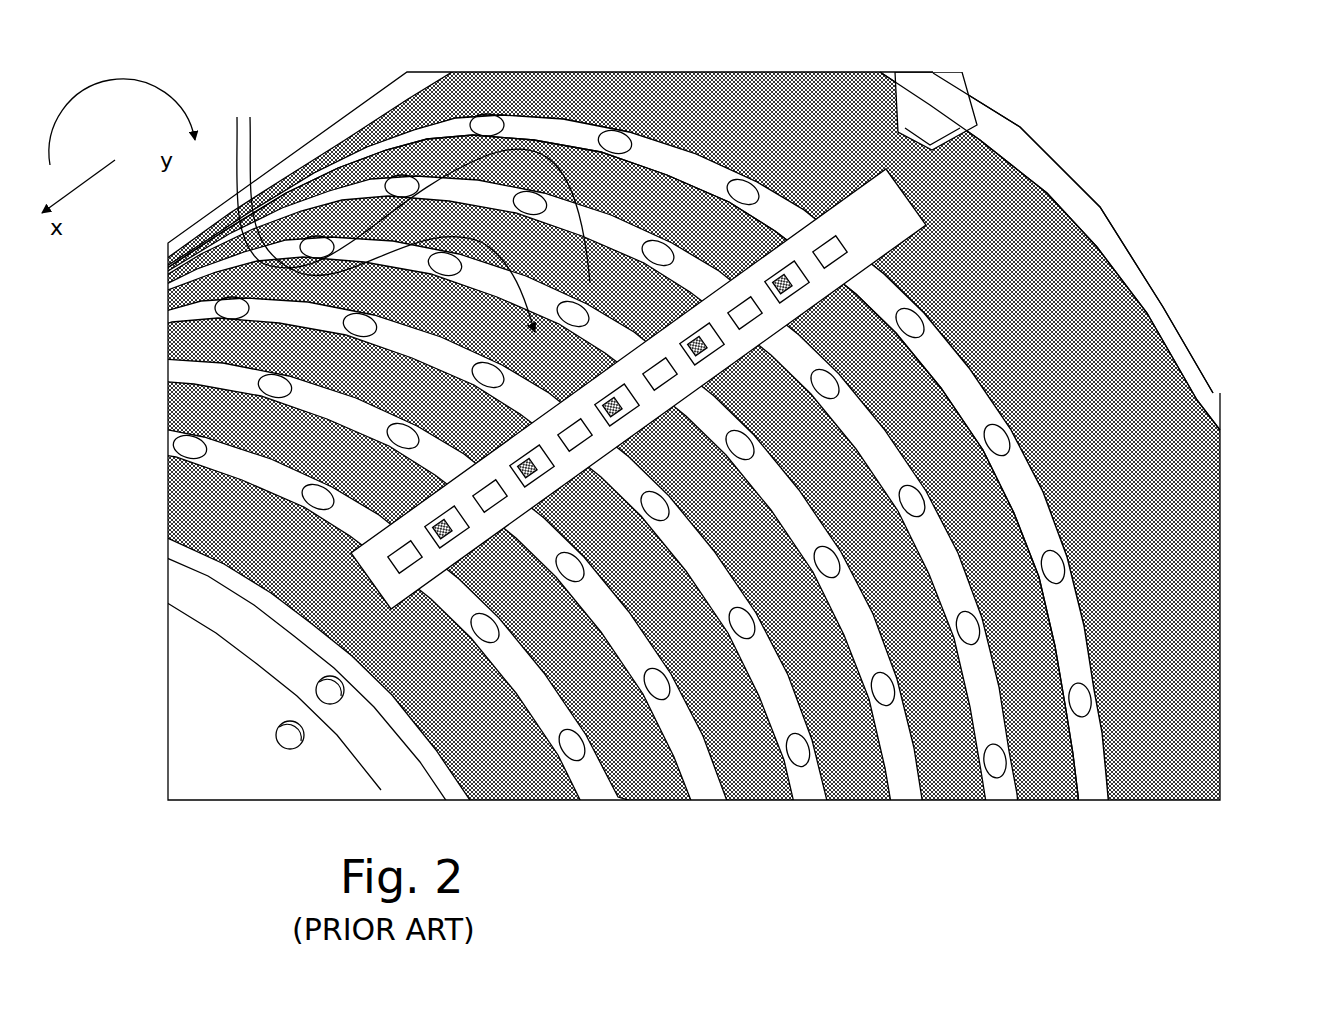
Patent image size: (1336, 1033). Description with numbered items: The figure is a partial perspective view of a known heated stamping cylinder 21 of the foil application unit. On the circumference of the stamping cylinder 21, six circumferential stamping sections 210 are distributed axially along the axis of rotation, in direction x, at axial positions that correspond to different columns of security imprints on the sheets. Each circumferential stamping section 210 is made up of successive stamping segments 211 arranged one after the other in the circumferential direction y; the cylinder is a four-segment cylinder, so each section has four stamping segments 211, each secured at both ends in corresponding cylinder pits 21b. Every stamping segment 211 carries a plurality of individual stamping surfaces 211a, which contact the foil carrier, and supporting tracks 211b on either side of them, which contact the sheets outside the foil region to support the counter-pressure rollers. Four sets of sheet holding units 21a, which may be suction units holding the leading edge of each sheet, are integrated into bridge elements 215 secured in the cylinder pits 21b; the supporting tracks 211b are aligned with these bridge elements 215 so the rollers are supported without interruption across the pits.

The stamping cylinder 21 is at (1123, 260).
The circumferential stamping section 210 is at (890, 297).
The sheet holding unit 21a is at (645, 300).
The cylinder pit 21b is at (925, 120).
The stamping segment 211 is at (1045, 765).
The stamping surface 211a is at (753, 625).
The supporting track 211b is at (1023, 543).
The bridge element 215 is at (406, 211).